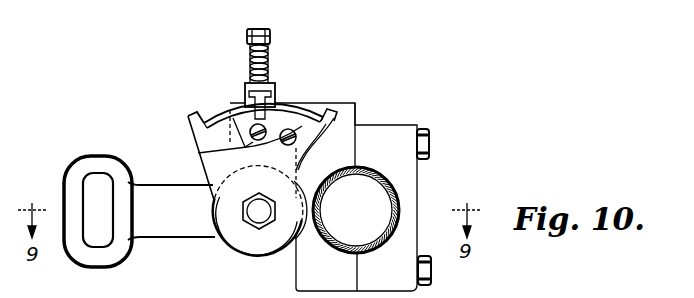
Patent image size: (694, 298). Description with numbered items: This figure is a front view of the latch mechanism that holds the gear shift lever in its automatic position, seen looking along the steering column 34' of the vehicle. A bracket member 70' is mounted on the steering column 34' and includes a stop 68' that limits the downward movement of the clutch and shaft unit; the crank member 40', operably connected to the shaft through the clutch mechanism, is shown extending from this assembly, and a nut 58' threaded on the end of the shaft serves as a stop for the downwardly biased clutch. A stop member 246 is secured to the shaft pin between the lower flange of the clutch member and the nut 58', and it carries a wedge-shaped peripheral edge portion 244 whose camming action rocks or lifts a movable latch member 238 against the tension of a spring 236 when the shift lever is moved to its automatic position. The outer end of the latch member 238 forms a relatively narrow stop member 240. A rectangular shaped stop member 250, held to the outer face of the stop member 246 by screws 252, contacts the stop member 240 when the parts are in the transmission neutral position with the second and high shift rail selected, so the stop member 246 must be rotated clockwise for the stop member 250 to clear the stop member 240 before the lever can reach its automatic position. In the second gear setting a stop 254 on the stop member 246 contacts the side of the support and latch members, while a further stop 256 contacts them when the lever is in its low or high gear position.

The spring 236 is at (270, 46).
The movable latch member 238 is at (249, 87).
The stop member 240 is at (277, 99).
The wedge-shaped peripheral edge portion 244 is at (220, 119).
The stop member 246 is at (191, 132).
The rectangular shaped stop member 250 is at (298, 122).
The screws 252 is at (208, 152).
The stop 254 is at (188, 118).
The stop 256 is at (330, 122).
The bracket member 70' is at (343, 197).
The steering column 34' is at (386, 209).
The crank member 40' is at (139, 214).
The nut 58' is at (240, 233).
The stop 68' is at (260, 215).